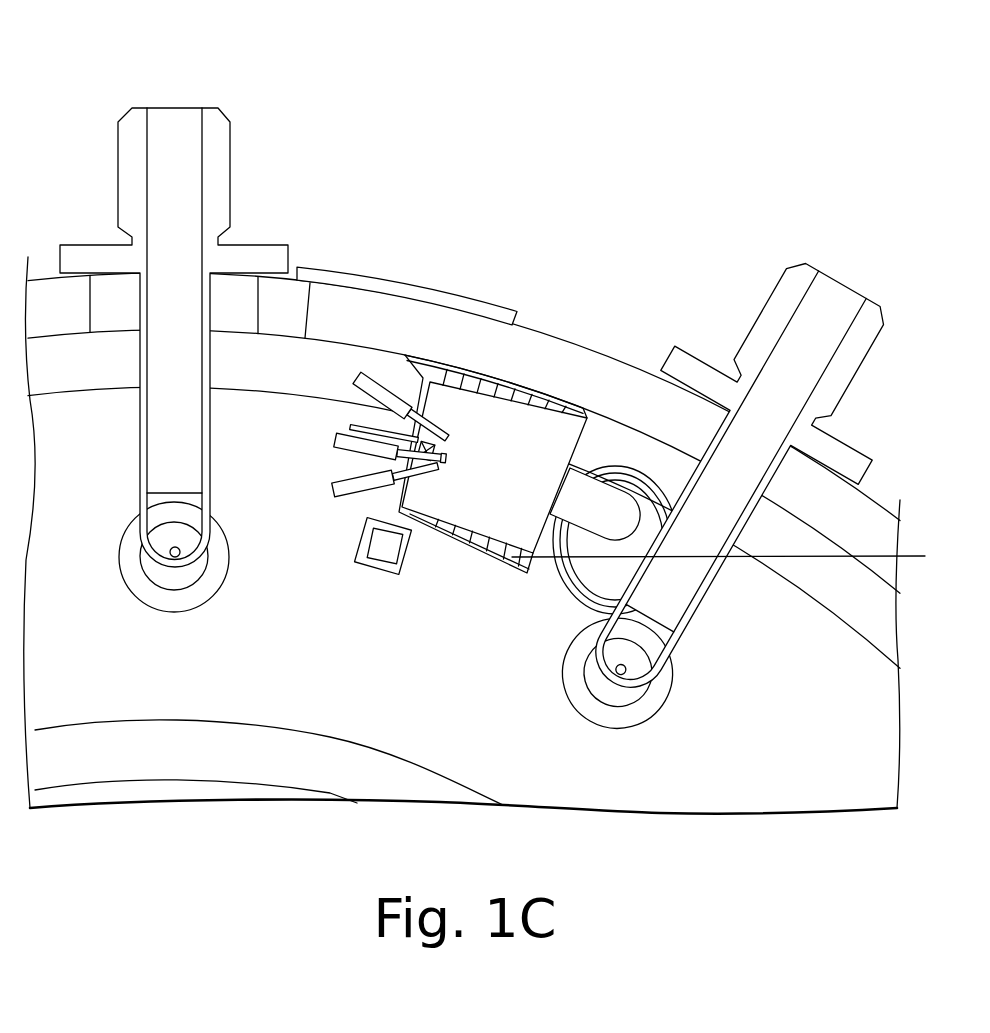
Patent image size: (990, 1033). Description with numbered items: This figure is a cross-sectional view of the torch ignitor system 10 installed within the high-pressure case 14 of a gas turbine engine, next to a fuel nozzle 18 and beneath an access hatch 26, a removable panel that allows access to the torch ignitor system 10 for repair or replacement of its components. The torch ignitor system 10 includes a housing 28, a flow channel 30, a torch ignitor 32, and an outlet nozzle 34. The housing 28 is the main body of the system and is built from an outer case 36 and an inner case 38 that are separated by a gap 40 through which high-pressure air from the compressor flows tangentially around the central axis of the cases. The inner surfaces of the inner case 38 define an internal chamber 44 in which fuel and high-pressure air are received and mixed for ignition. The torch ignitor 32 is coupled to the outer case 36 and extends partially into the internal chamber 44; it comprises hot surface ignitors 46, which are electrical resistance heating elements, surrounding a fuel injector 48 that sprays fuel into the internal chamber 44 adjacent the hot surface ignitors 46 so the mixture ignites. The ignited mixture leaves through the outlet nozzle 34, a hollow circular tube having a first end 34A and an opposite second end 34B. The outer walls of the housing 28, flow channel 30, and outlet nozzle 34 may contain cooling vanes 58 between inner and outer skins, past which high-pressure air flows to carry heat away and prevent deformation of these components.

The torch ignitor system 10 is at (428, 514).
The high-pressure case 14 is at (858, 523).
The fuel nozzle 18 is at (168, 137).
The access hatch 26 is at (462, 303).
The housing 28 is at (547, 380).
The flow channel 30 is at (387, 540).
The torch ignitor 32 is at (283, 538).
The outlet nozzle 34 is at (605, 482).
The first end 34A is at (597, 507).
The second end 34B is at (597, 582).
The outer case 36 is at (440, 543).
The inner case 38 is at (470, 550).
The gap 40 is at (493, 563).
The internal chamber 44 is at (499, 468).
The hot surface ignitors 46 is at (378, 392).
The fuel injector 48 is at (352, 423).
The cooling vanes 58 is at (734, 557).